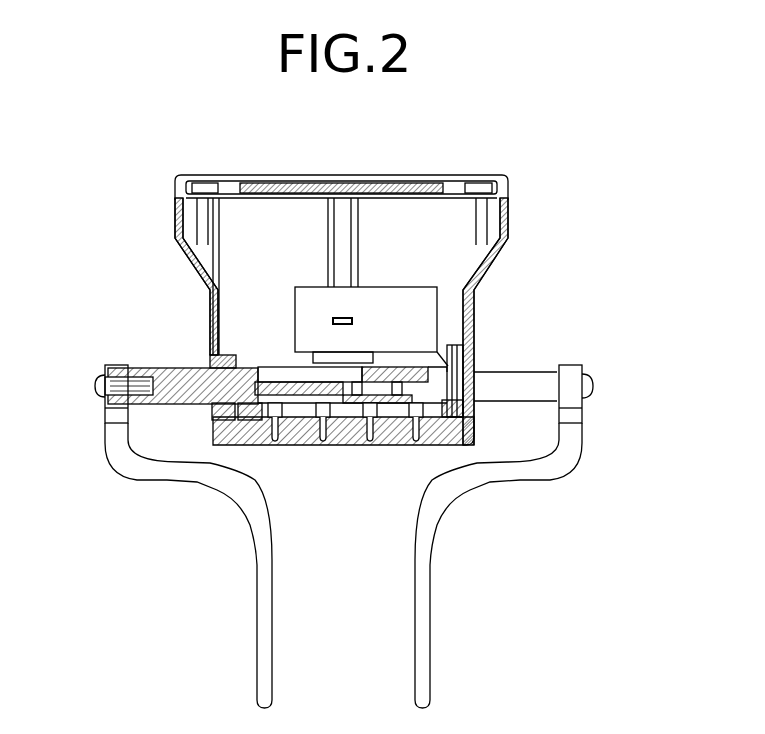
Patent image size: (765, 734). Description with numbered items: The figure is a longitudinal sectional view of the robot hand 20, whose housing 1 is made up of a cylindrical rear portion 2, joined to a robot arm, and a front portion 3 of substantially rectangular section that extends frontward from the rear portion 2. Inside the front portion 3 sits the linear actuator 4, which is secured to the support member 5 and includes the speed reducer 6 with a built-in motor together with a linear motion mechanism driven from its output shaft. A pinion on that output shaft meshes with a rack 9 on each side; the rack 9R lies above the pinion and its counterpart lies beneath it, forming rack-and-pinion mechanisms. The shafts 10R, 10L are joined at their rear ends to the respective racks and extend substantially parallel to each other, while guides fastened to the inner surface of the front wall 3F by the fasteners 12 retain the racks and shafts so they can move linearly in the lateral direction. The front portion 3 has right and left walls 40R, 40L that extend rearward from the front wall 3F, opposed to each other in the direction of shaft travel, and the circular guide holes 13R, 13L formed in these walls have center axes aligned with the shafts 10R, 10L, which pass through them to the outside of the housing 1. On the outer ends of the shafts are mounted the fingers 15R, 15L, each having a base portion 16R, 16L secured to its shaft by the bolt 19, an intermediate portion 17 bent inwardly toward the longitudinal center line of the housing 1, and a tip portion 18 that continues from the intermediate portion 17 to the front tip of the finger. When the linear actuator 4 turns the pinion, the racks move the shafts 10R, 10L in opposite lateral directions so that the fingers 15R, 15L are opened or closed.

The housing 1 is at (513, 204).
The rear portion 2 is at (175, 212).
The front portion 3 is at (210, 311).
The front wall 3F is at (397, 447).
The linear actuator 4 is at (268, 312).
The support member 5 is at (358, 232).
The speed reducer 6 is at (474, 315).
The rack 9 is at (393, 368).
The rack 9R is at (285, 368).
The shaft 10R is at (158, 370).
The shaft 10L is at (523, 372).
The fasteners 12 is at (284, 430).
The guide hole 13R is at (208, 400).
The guide hole 13L is at (480, 407).
The finger 15R is at (255, 615).
The finger 15L is at (432, 615).
The base portion 16R is at (106, 422).
The base portion 16L is at (582, 422).
The intermediate portion 17 is at (238, 500).
The tip portion 18 is at (257, 670).
The bolt 19 is at (95, 386).
The robot hand 20 is at (630, 210).
The right wall 40R is at (210, 352).
The left wall 40L is at (474, 350).